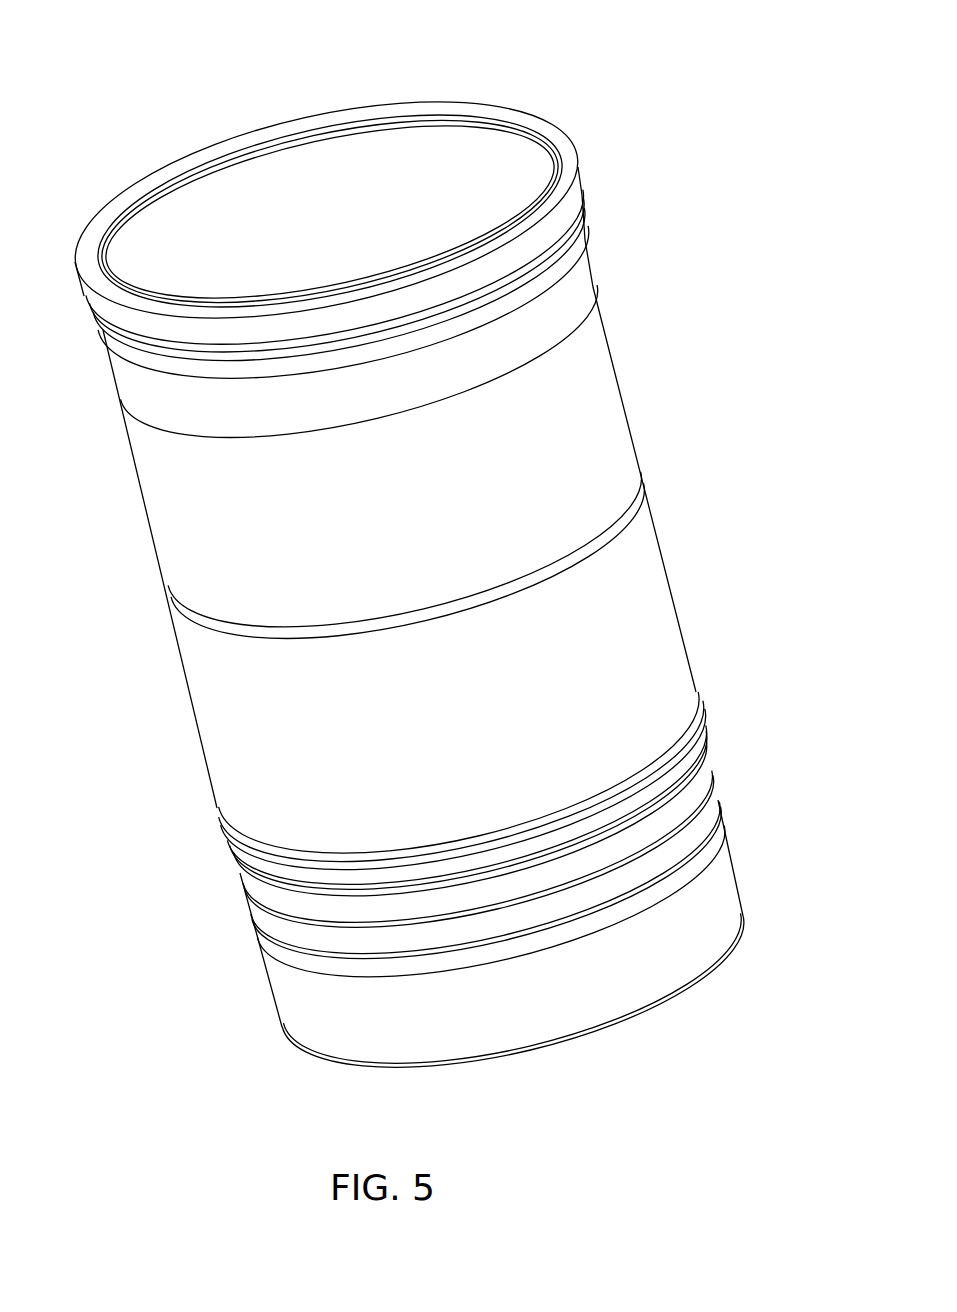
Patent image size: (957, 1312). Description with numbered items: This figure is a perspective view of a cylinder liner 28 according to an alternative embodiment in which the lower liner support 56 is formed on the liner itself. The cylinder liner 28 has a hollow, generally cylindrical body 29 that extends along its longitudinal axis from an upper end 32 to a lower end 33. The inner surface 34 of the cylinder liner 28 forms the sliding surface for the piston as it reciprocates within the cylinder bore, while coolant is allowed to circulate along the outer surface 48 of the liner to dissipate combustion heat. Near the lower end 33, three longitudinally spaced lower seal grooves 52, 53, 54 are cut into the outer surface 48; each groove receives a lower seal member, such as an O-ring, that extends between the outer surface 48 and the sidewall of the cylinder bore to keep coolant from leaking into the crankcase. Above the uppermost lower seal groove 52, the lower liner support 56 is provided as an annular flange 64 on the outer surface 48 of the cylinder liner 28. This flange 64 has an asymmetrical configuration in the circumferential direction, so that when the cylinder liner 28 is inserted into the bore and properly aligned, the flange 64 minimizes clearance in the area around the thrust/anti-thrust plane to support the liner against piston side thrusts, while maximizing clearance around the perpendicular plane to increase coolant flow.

The cylinder liner 28 is at (558, 98).
The hollow generally cylindrical body 29 is at (604, 376).
The upper end 32 is at (82, 268).
The lower end 33 is at (690, 985).
The inner surface 34 is at (447, 128).
The outer surface 48 is at (160, 522).
The lower seal groove 52 is at (258, 892).
The lower seal groove 53 is at (270, 923).
The lower seal groove 54 is at (277, 953).
The lower liner support 56 is at (712, 689).
The annular flange 64 is at (668, 778).